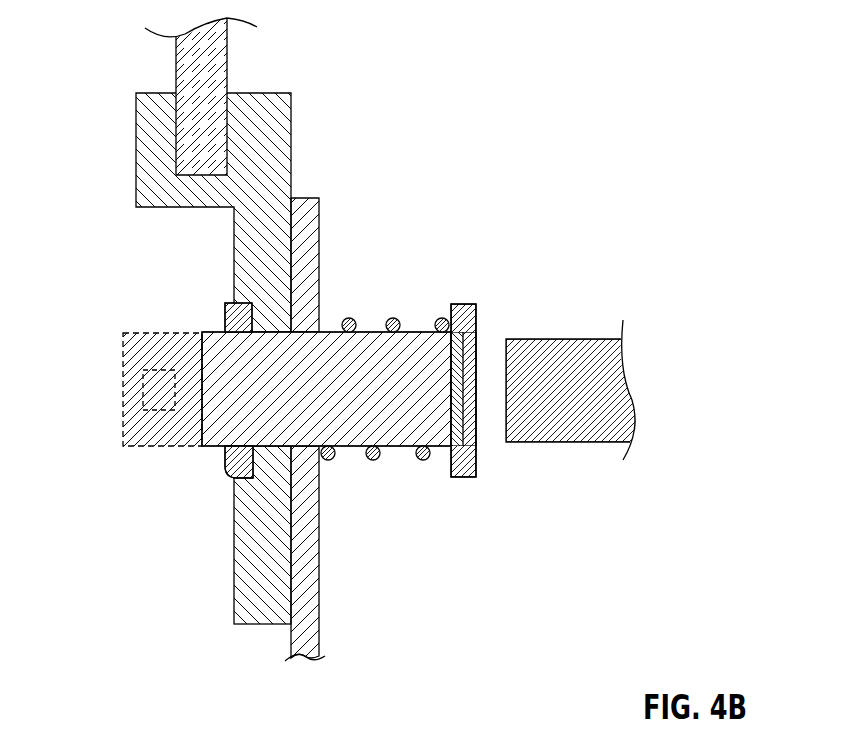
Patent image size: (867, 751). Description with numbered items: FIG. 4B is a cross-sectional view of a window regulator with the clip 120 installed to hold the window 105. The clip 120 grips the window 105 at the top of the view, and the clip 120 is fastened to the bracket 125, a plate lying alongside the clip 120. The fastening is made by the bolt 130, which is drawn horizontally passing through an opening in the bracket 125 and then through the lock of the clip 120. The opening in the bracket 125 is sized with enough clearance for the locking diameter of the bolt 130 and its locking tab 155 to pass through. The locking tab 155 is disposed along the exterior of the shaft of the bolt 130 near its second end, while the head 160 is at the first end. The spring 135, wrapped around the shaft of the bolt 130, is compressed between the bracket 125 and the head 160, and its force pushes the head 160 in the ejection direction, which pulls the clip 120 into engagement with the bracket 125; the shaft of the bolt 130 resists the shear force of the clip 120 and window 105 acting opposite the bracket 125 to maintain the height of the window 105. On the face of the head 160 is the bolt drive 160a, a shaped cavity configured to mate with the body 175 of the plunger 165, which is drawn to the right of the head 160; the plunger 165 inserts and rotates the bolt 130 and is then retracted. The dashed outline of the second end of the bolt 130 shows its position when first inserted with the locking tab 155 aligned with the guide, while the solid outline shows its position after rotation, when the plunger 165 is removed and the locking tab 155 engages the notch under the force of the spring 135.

The window 105 is at (177, 77).
The clip 120 is at (135, 143).
The bracket 125 is at (310, 200).
The bolt 130 is at (408, 491).
The spring 135 is at (352, 318).
The locking tab 155 is at (223, 300).
The head 160 is at (463, 304).
The bolt drive 160a is at (476, 345).
The plunger 165 is at (596, 476).
The body 175 is at (588, 338).